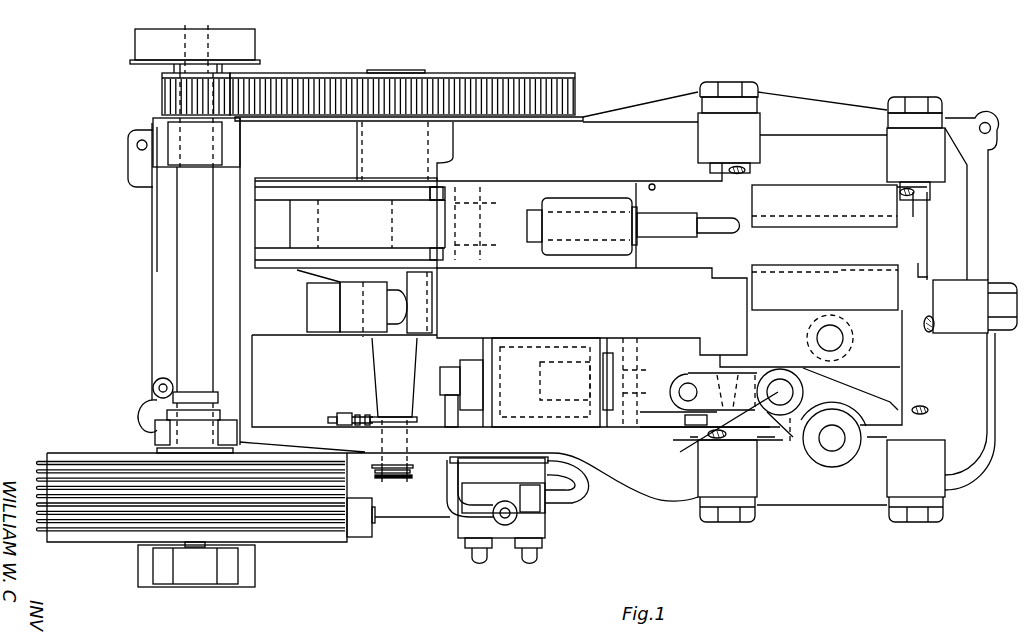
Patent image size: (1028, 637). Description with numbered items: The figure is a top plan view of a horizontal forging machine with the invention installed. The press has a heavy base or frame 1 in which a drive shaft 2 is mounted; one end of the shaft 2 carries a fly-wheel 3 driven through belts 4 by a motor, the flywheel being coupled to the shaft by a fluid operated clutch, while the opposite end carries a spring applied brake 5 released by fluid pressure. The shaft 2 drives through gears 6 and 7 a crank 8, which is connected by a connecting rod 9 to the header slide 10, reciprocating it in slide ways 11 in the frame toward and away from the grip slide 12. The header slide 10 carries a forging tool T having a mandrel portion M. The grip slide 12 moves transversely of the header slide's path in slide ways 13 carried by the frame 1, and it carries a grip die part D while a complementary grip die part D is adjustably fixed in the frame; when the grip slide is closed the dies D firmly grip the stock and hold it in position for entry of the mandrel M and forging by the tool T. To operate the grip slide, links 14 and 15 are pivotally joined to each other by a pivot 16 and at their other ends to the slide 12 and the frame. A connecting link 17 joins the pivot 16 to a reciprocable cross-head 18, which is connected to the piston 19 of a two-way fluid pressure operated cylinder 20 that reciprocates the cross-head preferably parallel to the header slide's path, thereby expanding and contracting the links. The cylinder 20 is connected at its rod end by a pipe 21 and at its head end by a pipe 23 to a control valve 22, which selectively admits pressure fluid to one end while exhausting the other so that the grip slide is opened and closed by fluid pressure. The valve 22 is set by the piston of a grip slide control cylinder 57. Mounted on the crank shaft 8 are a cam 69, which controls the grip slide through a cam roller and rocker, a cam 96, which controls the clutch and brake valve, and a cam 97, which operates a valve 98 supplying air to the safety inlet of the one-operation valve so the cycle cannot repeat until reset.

The frame 1 is at (593, 133).
The drive shaft 2 is at (183, 277).
The fly-wheel 3 is at (75, 452).
The belts 4 is at (33, 463).
The spring applied brake 5 is at (247, 48).
The gear 6 is at (163, 97).
The gear 7 is at (313, 83).
The crank 8 is at (373, 145).
The connecting rod 9 is at (337, 217).
The header slide 10 is at (522, 192).
The slide ways 11 is at (652, 184).
The grip slide 12 is at (885, 345).
The slide ways 13 is at (748, 257).
The link 14 is at (795, 360).
The link 15 is at (797, 433).
The pivot 16 is at (718, 431).
The connecting link 17 is at (702, 380).
The cross-head 18 is at (653, 350).
The piston 19 is at (557, 358).
The two-way fluid pressure operated cylinder 20 is at (520, 337).
The pipe 21 is at (580, 488).
The control valve 22 is at (535, 525).
The pipe 23 is at (452, 496).
The grip slide control cylinder 57 is at (360, 522).
The cam 69 is at (383, 477).
The cam 96 is at (397, 462).
The cam 97 is at (389, 417).
The valve 98 is at (342, 413).
The forging tool T is at (637, 215).
The mandrel portion M is at (708, 220).
The grip die part D is at (803, 207).